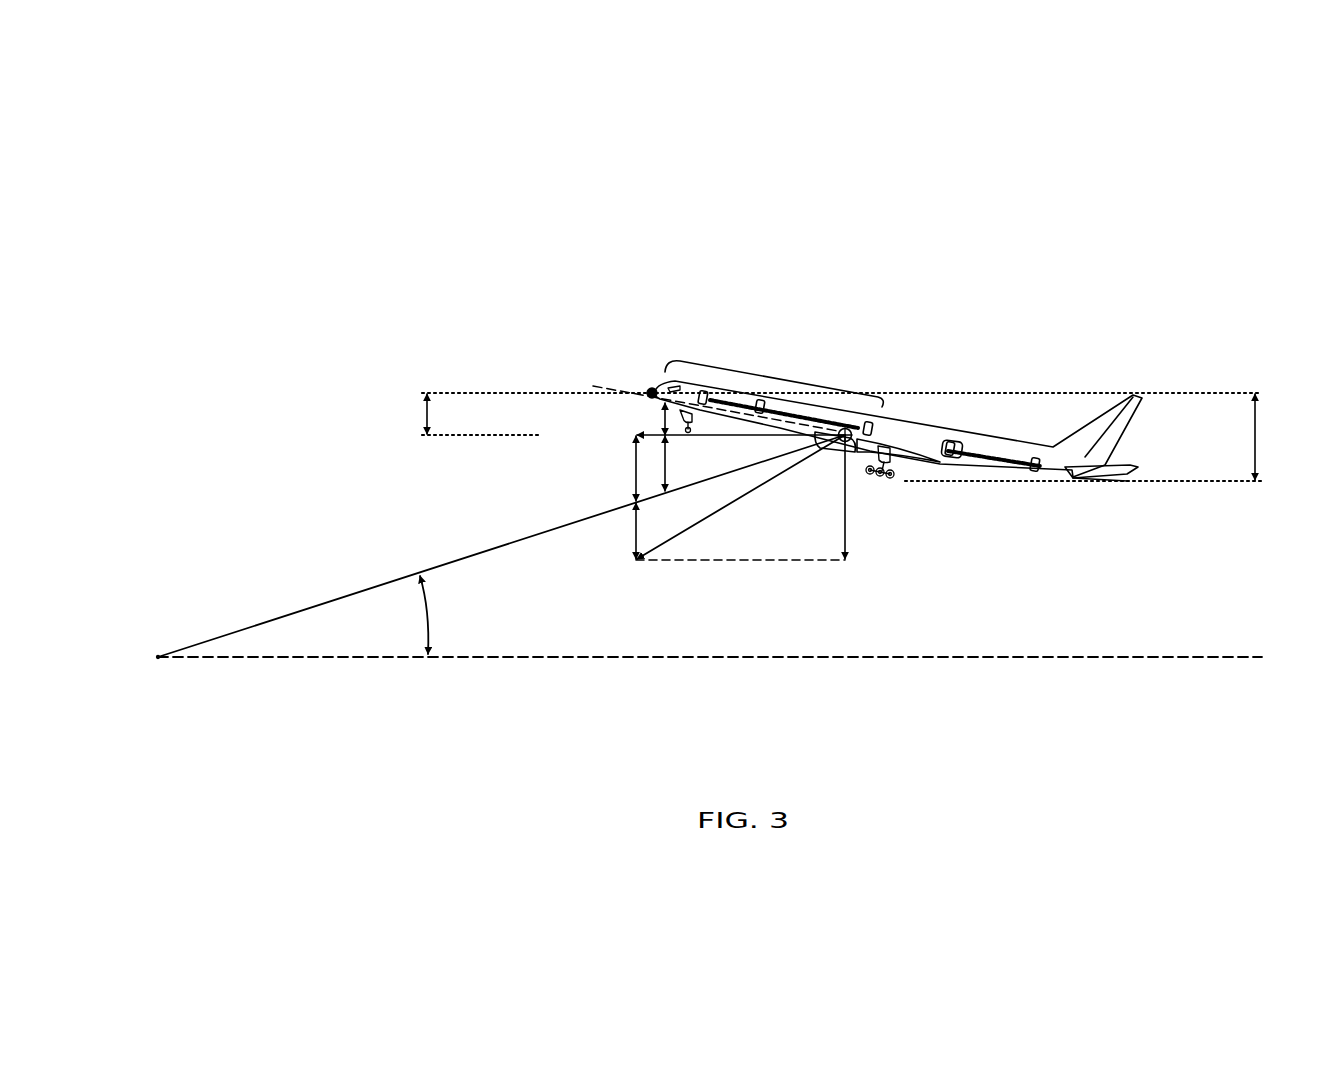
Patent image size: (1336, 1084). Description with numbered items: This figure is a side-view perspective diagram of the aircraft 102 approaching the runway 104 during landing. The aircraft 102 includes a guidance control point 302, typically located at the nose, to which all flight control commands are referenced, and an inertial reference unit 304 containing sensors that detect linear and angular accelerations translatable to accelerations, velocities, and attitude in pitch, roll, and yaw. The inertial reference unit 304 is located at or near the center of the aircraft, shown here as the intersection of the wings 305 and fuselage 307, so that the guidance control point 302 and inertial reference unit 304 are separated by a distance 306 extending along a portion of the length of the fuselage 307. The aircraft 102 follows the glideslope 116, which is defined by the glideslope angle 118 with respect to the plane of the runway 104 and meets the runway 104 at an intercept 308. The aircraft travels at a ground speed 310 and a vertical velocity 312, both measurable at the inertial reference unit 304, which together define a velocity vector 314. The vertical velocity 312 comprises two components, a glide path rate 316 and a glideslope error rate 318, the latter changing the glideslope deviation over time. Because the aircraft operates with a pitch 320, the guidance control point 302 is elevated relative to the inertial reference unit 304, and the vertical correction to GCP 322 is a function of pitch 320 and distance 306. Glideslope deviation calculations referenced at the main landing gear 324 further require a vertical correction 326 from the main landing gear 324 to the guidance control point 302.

The aircraft 102 is at (896, 250).
The runway 104 is at (963, 656).
The glideslope 116 is at (378, 581).
The glideslope angle 118 is at (429, 616).
The guidance control point 302 is at (648, 391).
The inertial reference unit 304 is at (849, 430).
The wings 305 is at (934, 422).
The distance 306 is at (764, 374).
The fuselage 307 is at (989, 436).
The intercept 308 is at (154, 647).
The ground speed 310 is at (634, 433).
The vertical velocity 312 is at (847, 540).
The velocity vector 314 is at (700, 527).
The glide path rate 316 is at (634, 466).
The glideslope error rate 318 is at (662, 461).
The pitch 320 is at (655, 416).
The vertical correction to GCP 322 is at (425, 417).
The main landing gear 324 is at (890, 477).
The vertical correction 326 is at (1256, 440).